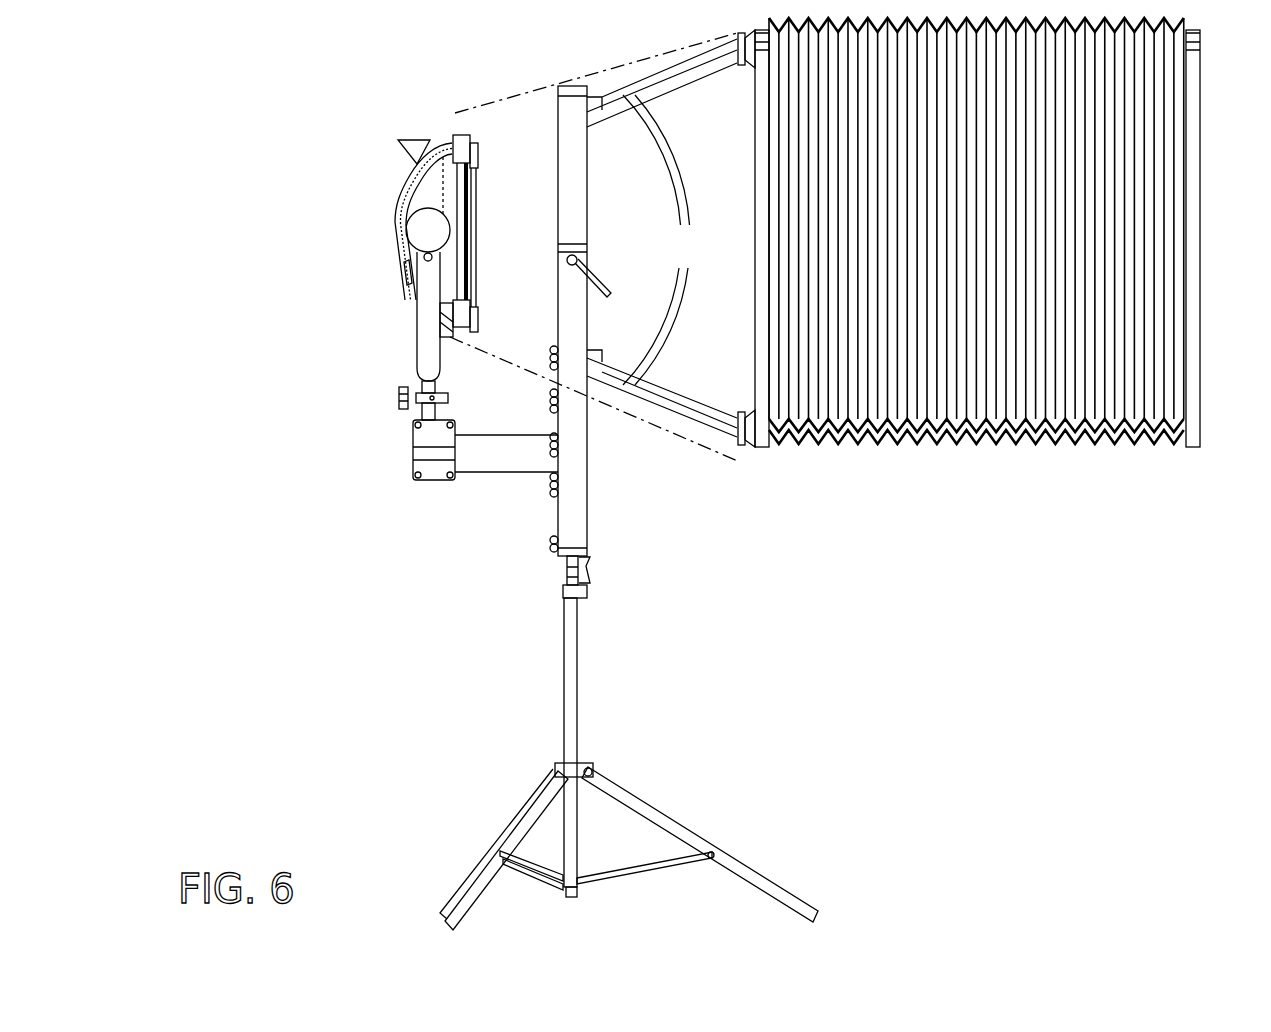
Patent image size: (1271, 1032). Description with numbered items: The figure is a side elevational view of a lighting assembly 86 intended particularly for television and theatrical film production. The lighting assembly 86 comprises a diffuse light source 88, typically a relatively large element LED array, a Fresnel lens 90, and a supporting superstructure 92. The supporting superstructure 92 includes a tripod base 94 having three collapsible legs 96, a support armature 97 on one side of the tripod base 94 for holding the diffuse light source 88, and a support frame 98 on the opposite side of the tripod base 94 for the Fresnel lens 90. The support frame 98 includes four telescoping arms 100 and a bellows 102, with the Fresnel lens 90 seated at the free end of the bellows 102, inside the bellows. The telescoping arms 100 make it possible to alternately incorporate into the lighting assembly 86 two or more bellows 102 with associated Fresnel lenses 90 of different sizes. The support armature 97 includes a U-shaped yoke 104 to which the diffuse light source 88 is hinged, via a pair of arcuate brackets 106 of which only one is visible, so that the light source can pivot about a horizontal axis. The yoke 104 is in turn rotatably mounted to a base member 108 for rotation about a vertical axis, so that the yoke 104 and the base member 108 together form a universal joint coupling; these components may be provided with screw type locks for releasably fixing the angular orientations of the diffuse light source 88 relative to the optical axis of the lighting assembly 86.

The lighting assembly 86 is at (801, 474).
The diffuse light source 88 is at (462, 221).
The Fresnel lens 90 is at (1006, 252).
The supporting superstructure 92 is at (550, 632).
The tripod base 94 is at (612, 778).
The collapsible legs 96 is at (537, 798).
The support armature 97 is at (398, 447).
The support frame 98 is at (678, 418).
The telescoping arms 100 is at (663, 240).
The bellows 102 is at (980, 422).
The U-shaped yoke 104 is at (417, 311).
The arcuate brackets 106 is at (398, 201).
The base member 108 is at (418, 415).